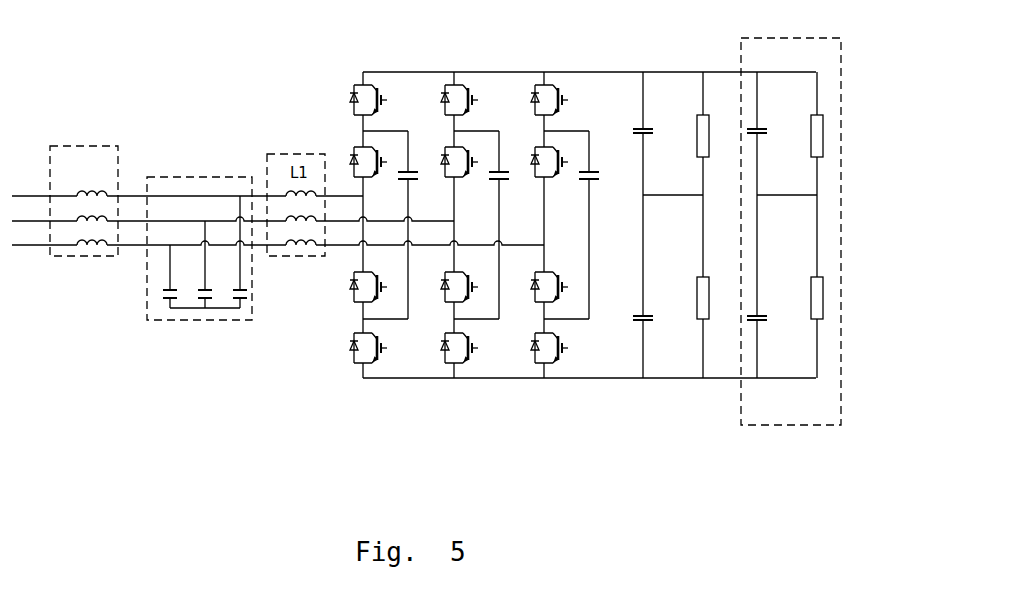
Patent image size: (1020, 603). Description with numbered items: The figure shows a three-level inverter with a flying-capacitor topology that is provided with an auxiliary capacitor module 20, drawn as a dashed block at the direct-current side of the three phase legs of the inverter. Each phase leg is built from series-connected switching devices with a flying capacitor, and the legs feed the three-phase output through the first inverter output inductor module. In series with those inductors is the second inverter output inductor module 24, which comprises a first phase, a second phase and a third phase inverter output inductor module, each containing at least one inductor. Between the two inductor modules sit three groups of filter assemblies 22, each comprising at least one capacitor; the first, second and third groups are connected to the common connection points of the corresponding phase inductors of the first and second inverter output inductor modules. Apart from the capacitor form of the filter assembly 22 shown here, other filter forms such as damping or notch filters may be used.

The auxiliary capacitor module 20 is at (786, 425).
The filter assemblies 22 is at (180, 177).
The second inverter output inductor module 24 is at (68, 146).